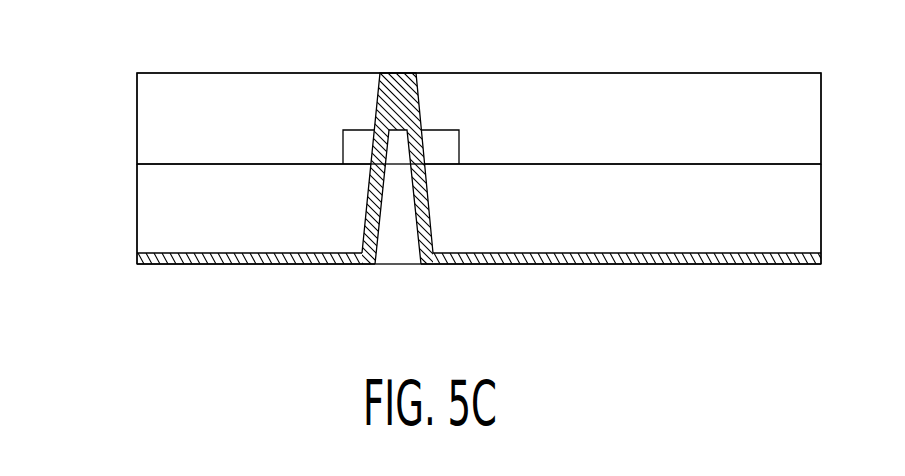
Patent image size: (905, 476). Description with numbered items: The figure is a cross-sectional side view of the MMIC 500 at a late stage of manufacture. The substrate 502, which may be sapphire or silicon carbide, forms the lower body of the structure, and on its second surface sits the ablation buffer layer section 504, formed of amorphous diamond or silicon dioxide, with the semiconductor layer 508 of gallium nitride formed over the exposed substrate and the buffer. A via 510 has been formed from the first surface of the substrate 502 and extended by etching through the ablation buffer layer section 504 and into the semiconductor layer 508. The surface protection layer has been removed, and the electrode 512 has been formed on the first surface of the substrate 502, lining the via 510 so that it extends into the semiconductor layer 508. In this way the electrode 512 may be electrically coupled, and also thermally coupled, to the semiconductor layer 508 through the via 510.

The MMIC 500 is at (82, 177).
The substrate 502 is at (783, 228).
The ablation buffer layer section 504 is at (340, 145).
The semiconductor layer 508 is at (783, 138).
The via 510 is at (398, 258).
The electrode 512 is at (136, 258).